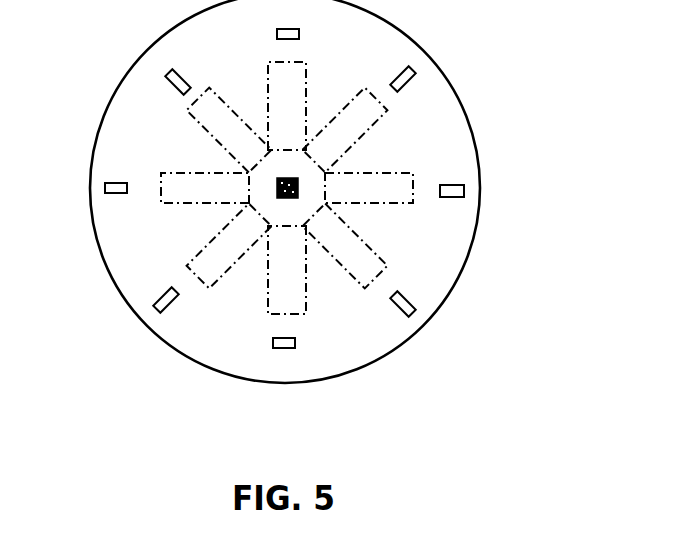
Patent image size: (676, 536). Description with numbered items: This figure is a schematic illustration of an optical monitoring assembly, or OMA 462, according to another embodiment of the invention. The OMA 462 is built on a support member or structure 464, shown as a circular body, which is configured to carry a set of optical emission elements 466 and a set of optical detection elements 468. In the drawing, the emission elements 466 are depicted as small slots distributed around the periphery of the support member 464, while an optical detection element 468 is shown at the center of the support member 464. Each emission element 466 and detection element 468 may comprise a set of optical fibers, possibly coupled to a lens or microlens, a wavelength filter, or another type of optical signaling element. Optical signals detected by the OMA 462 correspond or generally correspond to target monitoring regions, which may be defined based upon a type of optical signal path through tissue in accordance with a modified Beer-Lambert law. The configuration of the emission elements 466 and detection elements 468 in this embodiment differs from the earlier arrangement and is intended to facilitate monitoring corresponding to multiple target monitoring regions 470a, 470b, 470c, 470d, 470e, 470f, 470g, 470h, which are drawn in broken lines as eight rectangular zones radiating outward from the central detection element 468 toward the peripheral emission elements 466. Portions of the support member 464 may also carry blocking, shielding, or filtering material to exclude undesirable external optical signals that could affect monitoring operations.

The optical monitoring assembly 462 is at (285, 211).
The support member 464 is at (115, 285).
The optical emission element 466 is at (414, 71).
The optical detection element 468 is at (284, 178).
The target monitoring region 470a is at (298, 63).
The target monitoring region 470b is at (362, 128).
The target monitoring region 470c is at (375, 198).
The target monitoring region 470d is at (344, 262).
The target monitoring region 470e is at (284, 280).
The target monitoring region 470f is at (219, 250).
The target monitoring region 470g is at (202, 192).
The target monitoring region 470h is at (223, 130).